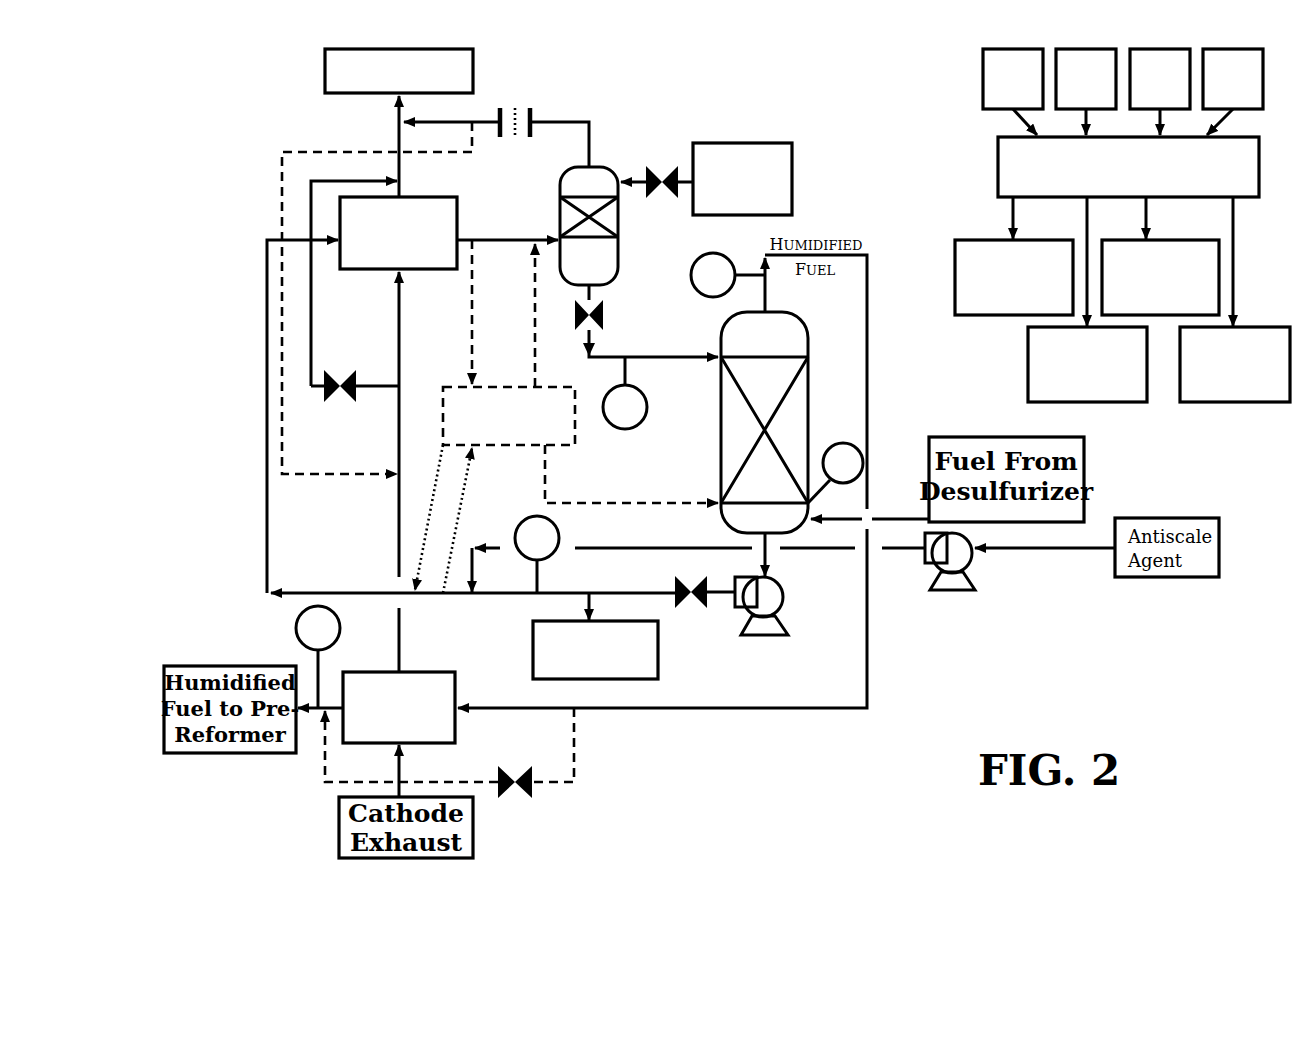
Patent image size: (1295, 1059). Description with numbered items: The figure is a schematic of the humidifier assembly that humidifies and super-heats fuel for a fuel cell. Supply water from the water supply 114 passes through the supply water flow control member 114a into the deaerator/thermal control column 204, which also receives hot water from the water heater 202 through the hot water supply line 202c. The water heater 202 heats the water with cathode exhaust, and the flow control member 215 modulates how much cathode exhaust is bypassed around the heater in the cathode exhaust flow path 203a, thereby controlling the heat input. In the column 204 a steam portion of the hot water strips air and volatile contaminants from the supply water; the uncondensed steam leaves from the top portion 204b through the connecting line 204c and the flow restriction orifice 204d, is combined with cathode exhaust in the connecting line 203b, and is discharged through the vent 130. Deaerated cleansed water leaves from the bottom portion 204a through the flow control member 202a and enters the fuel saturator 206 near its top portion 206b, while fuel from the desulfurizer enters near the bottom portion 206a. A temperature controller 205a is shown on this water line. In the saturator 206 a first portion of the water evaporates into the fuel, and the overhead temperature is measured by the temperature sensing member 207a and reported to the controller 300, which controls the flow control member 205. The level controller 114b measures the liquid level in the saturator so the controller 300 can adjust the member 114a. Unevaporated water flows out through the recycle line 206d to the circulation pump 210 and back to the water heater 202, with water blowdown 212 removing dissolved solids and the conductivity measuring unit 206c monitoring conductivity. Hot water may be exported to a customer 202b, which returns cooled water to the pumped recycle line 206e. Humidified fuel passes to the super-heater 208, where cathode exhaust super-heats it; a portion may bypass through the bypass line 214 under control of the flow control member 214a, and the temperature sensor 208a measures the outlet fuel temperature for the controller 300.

The vent 130 is at (325, 67).
The water supply 114 is at (735, 143).
The supply water flow control member 114a is at (677, 167).
The level controller 114b is at (856, 448).
The water heater 202 is at (362, 269).
The flow control member 202a is at (598, 318).
The customer 202b is at (508, 445).
The hot water supply line 202c is at (535, 232).
The cathode exhaust flow path 203a is at (399, 296).
The connecting line 203b is at (397, 108).
The deaerator/thermal control column 204 is at (620, 240).
The bottom portion 204a is at (620, 268).
The top portion 204b is at (580, 175).
The connecting line 204c is at (588, 122).
The flow restriction orifice 204d is at (520, 90).
The flow control member 205 is at (690, 606).
The temperature controller 205a is at (617, 428).
The fuel saturator 206 is at (721, 445).
The bottom portion 206a is at (720, 507).
The top portion 206b is at (778, 331).
The conductivity measuring unit 206c is at (527, 520).
The recycle line 206d is at (762, 557).
The pumped recycle line 206e is at (372, 593).
The temperature sensing member 207a is at (722, 262).
The super-heater 208 is at (405, 672).
The temperature sensor 208a is at (297, 620).
The circulation pump 210 is at (776, 605).
The water blowdown 212 is at (533, 640).
The bypass line 214 is at (575, 778).
The flow control member 214a is at (520, 770).
The flow control member 215 is at (340, 400).
The controller 300 is at (998, 166).